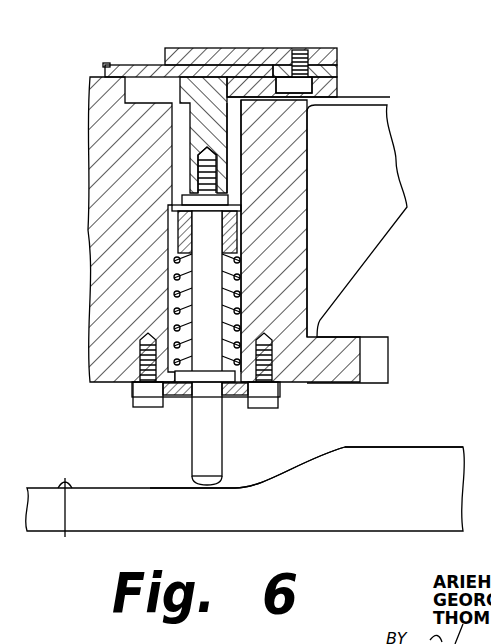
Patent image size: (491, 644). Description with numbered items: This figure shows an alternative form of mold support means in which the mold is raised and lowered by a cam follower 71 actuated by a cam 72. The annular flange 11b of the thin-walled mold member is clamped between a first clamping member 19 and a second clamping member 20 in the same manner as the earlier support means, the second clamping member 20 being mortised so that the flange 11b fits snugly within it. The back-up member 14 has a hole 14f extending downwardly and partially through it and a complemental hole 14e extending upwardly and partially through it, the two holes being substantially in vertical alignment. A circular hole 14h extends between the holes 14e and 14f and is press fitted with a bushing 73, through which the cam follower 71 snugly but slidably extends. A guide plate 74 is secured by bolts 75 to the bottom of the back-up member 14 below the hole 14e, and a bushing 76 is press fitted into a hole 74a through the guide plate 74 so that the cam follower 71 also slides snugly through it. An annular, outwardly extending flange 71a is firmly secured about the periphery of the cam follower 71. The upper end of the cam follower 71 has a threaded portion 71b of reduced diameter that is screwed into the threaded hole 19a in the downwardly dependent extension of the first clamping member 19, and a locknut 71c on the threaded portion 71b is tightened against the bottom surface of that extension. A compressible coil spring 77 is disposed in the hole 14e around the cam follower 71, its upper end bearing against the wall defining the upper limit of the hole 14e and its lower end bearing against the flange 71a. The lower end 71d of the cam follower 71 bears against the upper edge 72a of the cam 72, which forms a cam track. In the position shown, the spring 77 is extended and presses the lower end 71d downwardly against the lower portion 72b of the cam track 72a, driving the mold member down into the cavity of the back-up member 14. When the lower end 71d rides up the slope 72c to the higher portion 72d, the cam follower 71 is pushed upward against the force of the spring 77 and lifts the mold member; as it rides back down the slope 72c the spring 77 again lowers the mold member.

The annular flange portion 11b is at (130, 65).
The second clamping member 20 is at (260, 50).
The first clamping member 19 is at (338, 80).
The hole 19a is at (227, 162).
The back-up member 14 is at (147, 299).
The hole 14f is at (238, 178).
The circular hole 14h is at (243, 250).
The hole 14e is at (243, 310).
The bushing 73 is at (236, 225).
The compressible coil spring 77 is at (242, 282).
The cam follower 71 is at (222, 422).
The annular flange 71a is at (170, 372).
The threaded portion 71b is at (172, 207).
The locknut 71c is at (182, 195).
The lower end 71d is at (222, 483).
The guide plate 74 is at (283, 395).
The hole 74a is at (180, 398).
The bolts 75 is at (278, 400).
The bushing 76 is at (188, 397).
The cam 72 is at (363, 503).
The upper edge 72a is at (70, 522).
The lower portion 72b is at (155, 488).
The slope 72c is at (270, 477).
The higher portion 72d is at (432, 447).